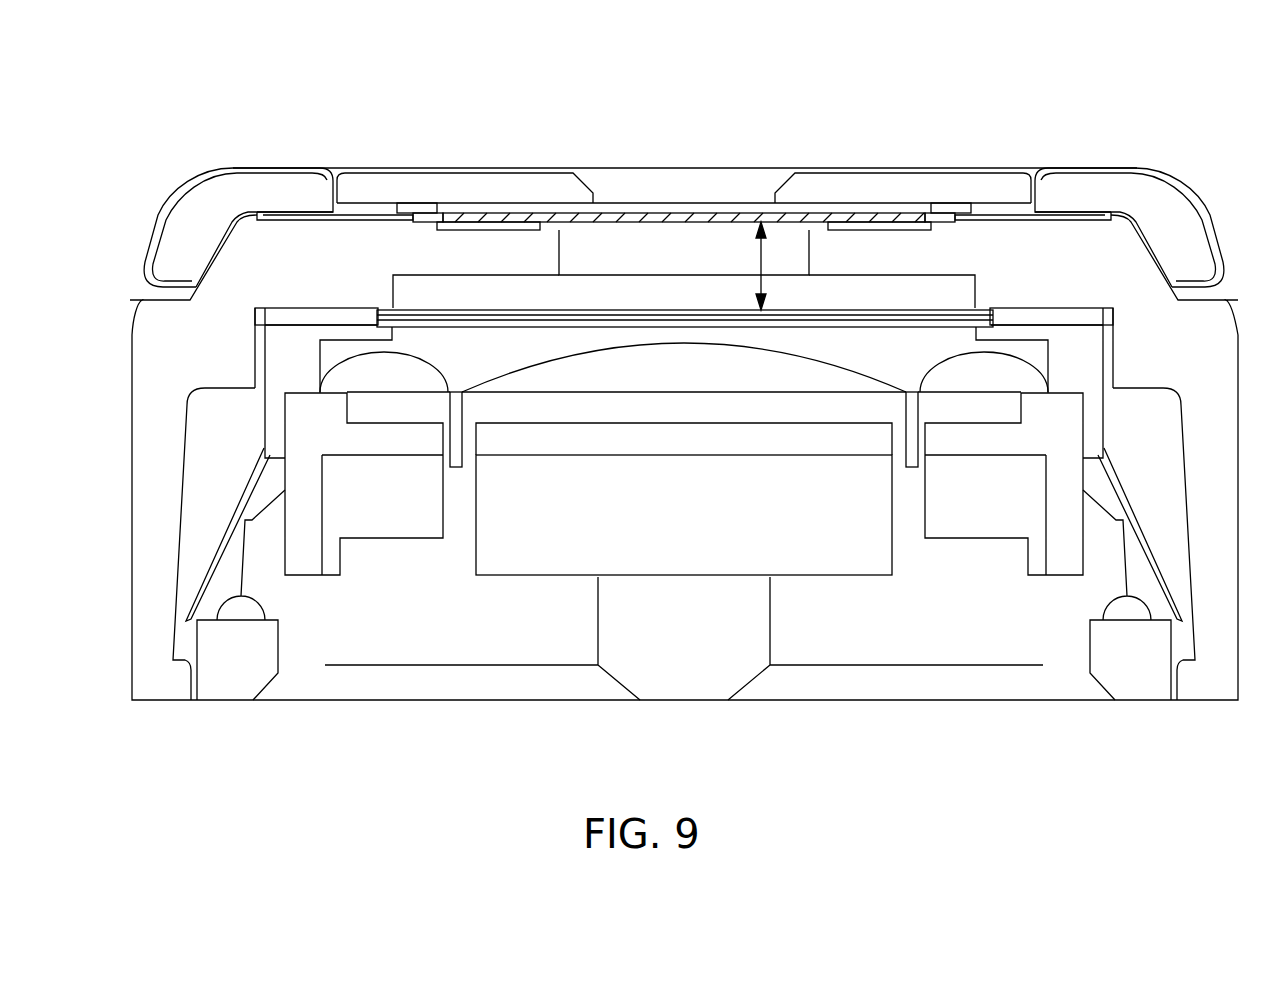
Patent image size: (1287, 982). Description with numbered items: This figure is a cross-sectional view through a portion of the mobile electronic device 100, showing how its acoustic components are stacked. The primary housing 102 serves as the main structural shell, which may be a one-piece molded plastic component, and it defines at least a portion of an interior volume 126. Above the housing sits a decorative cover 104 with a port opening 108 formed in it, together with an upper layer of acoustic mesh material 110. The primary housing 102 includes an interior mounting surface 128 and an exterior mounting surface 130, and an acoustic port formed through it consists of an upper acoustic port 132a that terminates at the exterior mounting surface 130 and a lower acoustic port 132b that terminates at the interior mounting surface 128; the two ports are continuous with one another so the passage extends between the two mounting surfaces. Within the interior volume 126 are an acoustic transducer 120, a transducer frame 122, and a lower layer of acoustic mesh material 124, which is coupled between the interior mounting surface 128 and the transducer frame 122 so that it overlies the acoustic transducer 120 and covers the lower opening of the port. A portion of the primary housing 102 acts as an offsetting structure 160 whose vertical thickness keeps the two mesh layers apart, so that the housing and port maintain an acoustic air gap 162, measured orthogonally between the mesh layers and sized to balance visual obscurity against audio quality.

The mobile electronic device 100 is at (106, 108).
The primary housing 102 is at (1207, 361).
The decorative cover 104 is at (432, 188).
The port opening 108 is at (685, 192).
The upper layer of acoustic mesh material 110 is at (620, 218).
The acoustic transducer 120 is at (594, 519).
The transducer frame 122 is at (280, 360).
The lower layer of acoustic mesh material 124 is at (460, 318).
The interior volume 126 is at (486, 635).
The interior mounting surface 128 is at (320, 311).
The exterior mounting surface 130 is at (495, 225).
The upper acoustic port 132a is at (663, 271).
The lower acoustic port 132b is at (543, 307).
The offsetting structure 160 is at (283, 243).
The acoustic air gap 162 is at (758, 256).